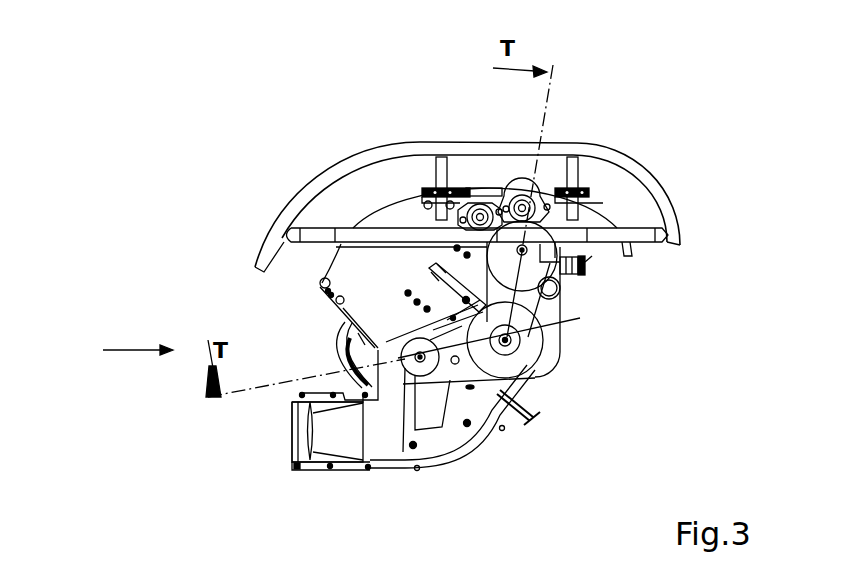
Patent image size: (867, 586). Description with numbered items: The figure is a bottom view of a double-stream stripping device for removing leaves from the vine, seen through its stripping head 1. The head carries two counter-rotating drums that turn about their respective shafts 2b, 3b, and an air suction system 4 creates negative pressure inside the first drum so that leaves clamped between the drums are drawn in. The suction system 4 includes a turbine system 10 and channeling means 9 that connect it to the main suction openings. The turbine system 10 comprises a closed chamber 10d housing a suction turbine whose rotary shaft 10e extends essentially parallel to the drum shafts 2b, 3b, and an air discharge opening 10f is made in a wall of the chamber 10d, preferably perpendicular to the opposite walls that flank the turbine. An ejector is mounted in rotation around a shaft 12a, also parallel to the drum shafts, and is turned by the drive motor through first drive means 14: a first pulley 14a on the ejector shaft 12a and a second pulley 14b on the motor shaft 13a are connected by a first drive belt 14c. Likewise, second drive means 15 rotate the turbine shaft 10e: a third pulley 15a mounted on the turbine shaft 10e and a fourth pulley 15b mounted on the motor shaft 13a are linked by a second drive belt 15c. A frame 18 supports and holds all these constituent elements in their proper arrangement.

The stripping head 1 is at (268, 162).
The shaft of the first drum 2b is at (473, 207).
The shaft of the second drum 3b is at (520, 205).
The air suction system 4 is at (127, 359).
The channeling means 9 is at (345, 346).
The turbine system 10 is at (365, 490).
The closed chamber 10d is at (483, 452).
The shaft of the turbine 10e is at (421, 362).
The air discharge opening 10f is at (282, 439).
The shaft of the ejector 12a is at (562, 280).
The shaft of the motor 13a is at (533, 342).
The first drive means 14 is at (447, 257).
The first pulley 14a is at (540, 248).
The second pulley 14b is at (537, 381).
The first drive belt 14c is at (563, 310).
The second drive means 15 is at (449, 396).
The third pulley 15a is at (413, 372).
The fourth pulley 15b is at (508, 350).
The second drive belt 15c is at (470, 418).
The frame 18 is at (588, 268).